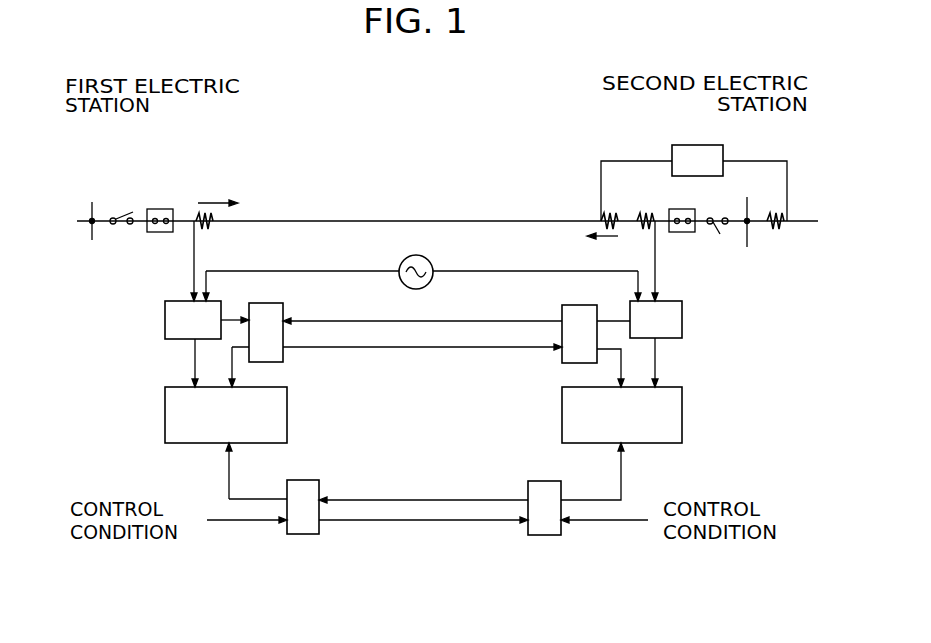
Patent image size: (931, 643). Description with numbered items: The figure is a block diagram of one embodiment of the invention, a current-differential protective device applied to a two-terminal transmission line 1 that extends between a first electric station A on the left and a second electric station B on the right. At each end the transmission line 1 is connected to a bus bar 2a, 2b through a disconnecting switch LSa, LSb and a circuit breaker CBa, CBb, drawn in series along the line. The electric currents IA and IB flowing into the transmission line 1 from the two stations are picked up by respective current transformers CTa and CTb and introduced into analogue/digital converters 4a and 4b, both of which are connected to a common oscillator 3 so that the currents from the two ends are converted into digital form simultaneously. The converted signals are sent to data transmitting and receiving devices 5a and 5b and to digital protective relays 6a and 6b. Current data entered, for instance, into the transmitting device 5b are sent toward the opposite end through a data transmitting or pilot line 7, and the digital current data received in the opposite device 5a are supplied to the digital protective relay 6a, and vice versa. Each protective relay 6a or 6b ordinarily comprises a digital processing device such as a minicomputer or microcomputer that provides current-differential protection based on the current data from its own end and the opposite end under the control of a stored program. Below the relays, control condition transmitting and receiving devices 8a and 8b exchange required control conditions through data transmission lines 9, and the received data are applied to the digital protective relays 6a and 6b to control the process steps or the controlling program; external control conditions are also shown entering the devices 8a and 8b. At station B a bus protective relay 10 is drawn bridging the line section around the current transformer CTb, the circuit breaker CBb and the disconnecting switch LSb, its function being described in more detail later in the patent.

The transmission line 1 is at (426, 220).
The bus bar 2a is at (91, 213).
The bus bar 2b is at (748, 207).
The common oscillator 3 is at (426, 257).
The analogue/digital converter 4a is at (165, 302).
The analogue/digital converter 4b is at (684, 313).
The data transmitting and receiving device 5a is at (282, 304).
The data transmitting and receiving device 5b is at (574, 305).
The digital protective relay 6a is at (288, 423).
The digital protective relay 6b is at (683, 423).
The data transmitting line 7 is at (421, 352).
The control condition transmitting and receiving device 8a is at (305, 535).
The control condition transmitting and receiving device 8b is at (537, 536).
The data transmission line 9 is at (405, 495).
The bus protective relay 10 is at (672, 146).
The disconnecting switch LSa is at (123, 214).
The disconnecting switch LSb is at (722, 240).
The circuit breaker CBa is at (160, 208).
The circuit breaker CBb is at (692, 207).
The current transformer CTa is at (208, 226).
The current transformer CTb is at (635, 242).
The electric current IA is at (233, 196).
The electric current IB is at (602, 249).